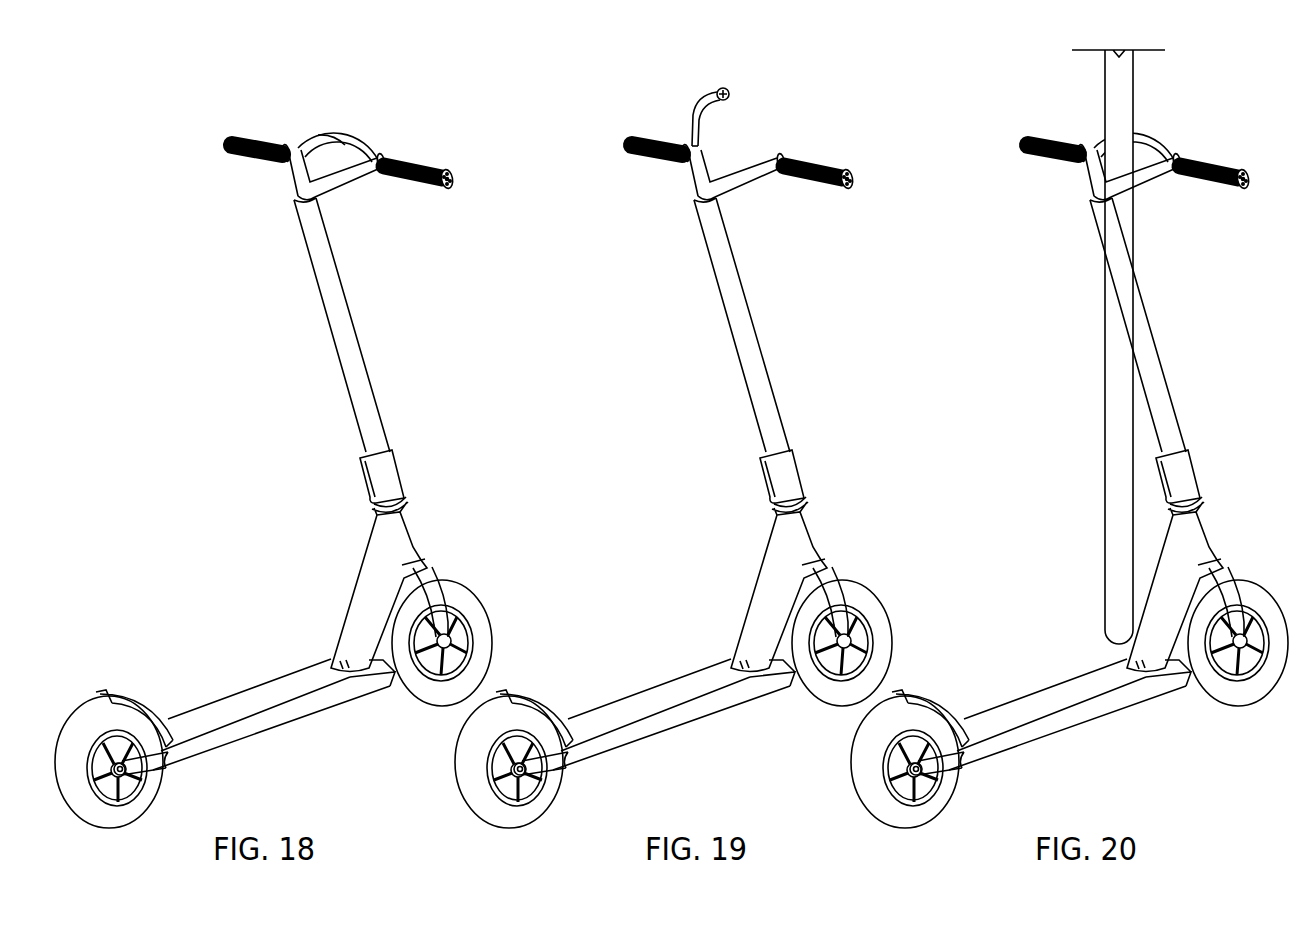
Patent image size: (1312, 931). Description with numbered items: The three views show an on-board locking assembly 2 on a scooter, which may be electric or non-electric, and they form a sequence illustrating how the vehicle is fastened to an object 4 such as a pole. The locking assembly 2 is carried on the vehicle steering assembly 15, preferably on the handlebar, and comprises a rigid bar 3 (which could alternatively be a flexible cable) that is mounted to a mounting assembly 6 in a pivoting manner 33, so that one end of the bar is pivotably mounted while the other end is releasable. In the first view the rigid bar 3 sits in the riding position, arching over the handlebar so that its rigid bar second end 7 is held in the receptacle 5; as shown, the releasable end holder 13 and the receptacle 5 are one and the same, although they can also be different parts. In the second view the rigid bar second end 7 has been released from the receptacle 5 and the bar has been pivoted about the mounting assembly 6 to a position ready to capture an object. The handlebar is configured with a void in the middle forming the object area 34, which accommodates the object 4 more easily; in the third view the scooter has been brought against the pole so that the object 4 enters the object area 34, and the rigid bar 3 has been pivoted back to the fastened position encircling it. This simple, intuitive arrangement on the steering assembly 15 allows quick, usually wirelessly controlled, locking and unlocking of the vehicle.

In FIG. 18, the on-board locking assembly 2 is at (343, 131).
In FIG. 18, the rigid bar 3 is at (342, 133).
In FIG. 19, the rigid bar 3 is at (690, 109).
In FIG. 20, the rigid bar 3 is at (1135, 132).
In FIG. 20, the object 4 is at (1110, 347).
In FIG. 18, the receptacle 5 is at (417, 160).
In FIG. 19, the receptacle 5 is at (798, 156).
In FIG. 18, the mounting assembly 6 is at (299, 140).
In FIG. 18, the rigid bar second end 7 is at (368, 147).
In FIG. 19, the rigid bar second end 7 is at (746, 87).
In FIG. 18, the releasable end holder 13 is at (356, 165).
In FIG. 18, the vehicle steering assembly 15 is at (443, 135).
In FIG. 19, the vehicle steering assembly 15 is at (816, 391).
In FIG. 19, the pivoting manner 33 is at (673, 121).
In FIG. 18, the object area 34 is at (323, 158).